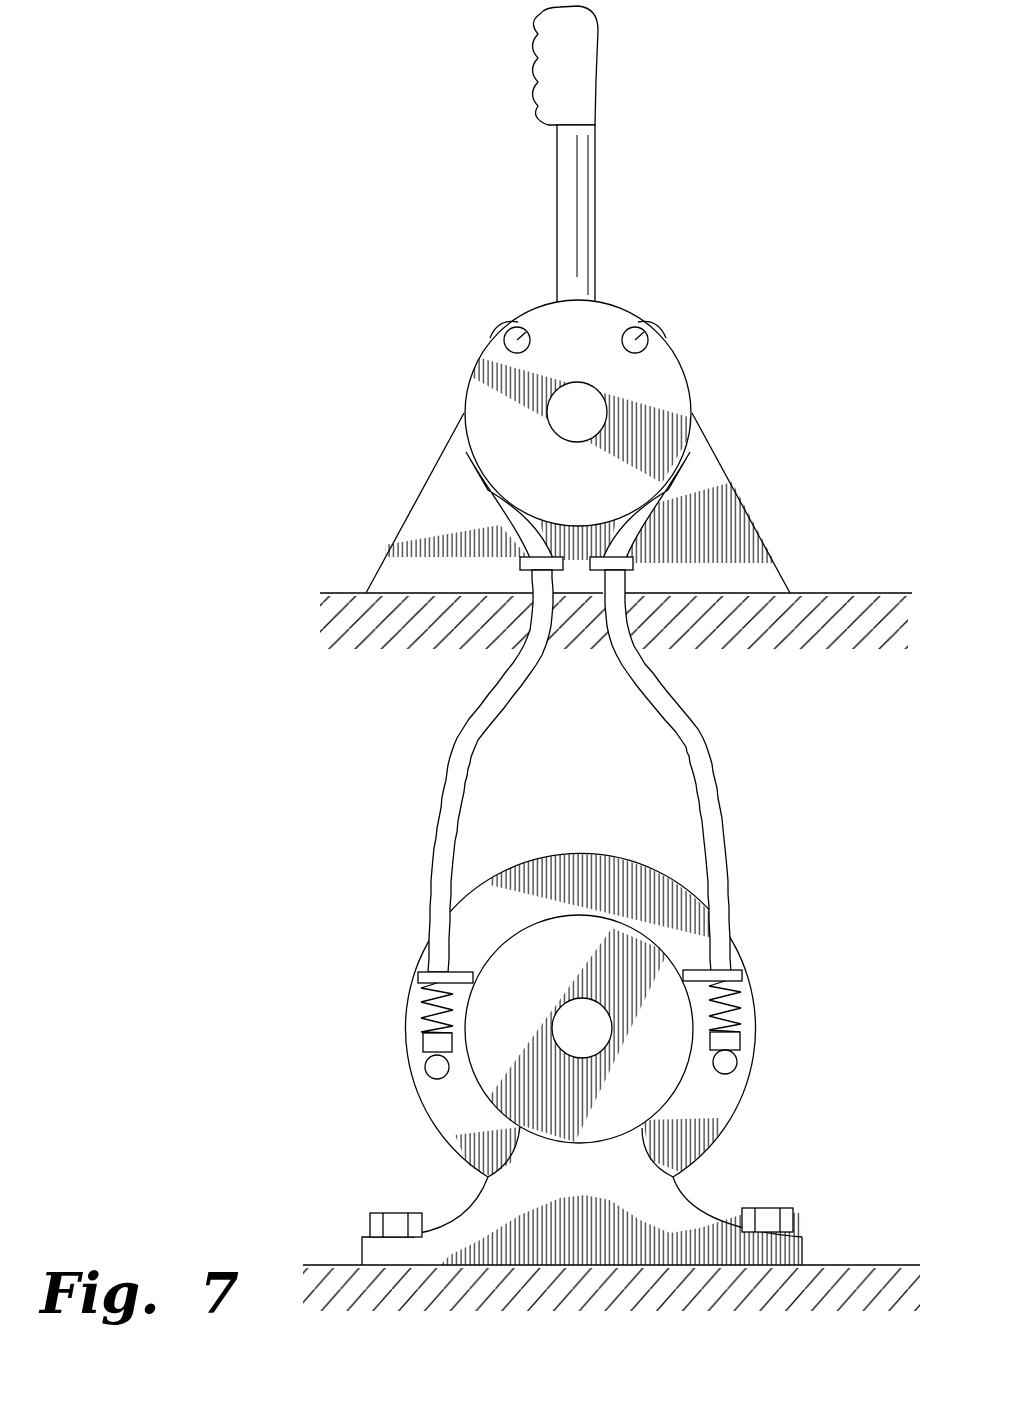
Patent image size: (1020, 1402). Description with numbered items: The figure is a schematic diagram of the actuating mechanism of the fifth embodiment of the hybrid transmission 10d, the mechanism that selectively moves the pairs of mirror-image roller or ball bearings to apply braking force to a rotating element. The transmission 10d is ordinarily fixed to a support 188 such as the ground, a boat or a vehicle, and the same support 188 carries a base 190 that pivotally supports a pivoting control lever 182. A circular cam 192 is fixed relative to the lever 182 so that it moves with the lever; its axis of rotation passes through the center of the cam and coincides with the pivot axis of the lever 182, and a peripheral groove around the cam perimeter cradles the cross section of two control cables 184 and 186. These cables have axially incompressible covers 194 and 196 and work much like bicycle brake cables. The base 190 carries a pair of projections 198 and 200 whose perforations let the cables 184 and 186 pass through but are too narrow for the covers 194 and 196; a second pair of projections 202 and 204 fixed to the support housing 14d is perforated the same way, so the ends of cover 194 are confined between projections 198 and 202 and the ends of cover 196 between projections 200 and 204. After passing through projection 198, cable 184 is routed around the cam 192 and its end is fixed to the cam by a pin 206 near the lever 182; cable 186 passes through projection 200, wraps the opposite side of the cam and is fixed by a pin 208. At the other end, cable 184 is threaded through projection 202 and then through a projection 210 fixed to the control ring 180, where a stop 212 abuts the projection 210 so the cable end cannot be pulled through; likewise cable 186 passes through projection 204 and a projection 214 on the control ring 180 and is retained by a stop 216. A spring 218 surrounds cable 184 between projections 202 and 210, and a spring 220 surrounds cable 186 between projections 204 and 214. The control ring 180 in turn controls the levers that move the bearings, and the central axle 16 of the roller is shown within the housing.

The hybrid transmission 10d is at (840, 869).
The support housing 14d is at (652, 1083).
The axle 16 is at (598, 1043).
The control ring 180 is at (578, 856).
The pivoting control lever 182 is at (585, 178).
The control cable 184 is at (645, 512).
The control cable 186 is at (505, 503).
The support 188 is at (830, 593).
The base 190 is at (697, 467).
The circular cam 192 is at (668, 375).
The cover 194 is at (703, 748).
The cover 196 is at (458, 752).
The projection 198 is at (633, 562).
The projection 200 is at (522, 563).
The projection 202 is at (740, 976).
The projection 204 is at (430, 976).
The pin 206 is at (648, 330).
The pin 208 is at (505, 343).
The projection 210 is at (742, 1042).
The stop 212 is at (735, 1064).
The projection 214 is at (425, 1042).
The stop 216 is at (428, 1066).
The spring 218 is at (740, 990).
The spring 220 is at (423, 1020).